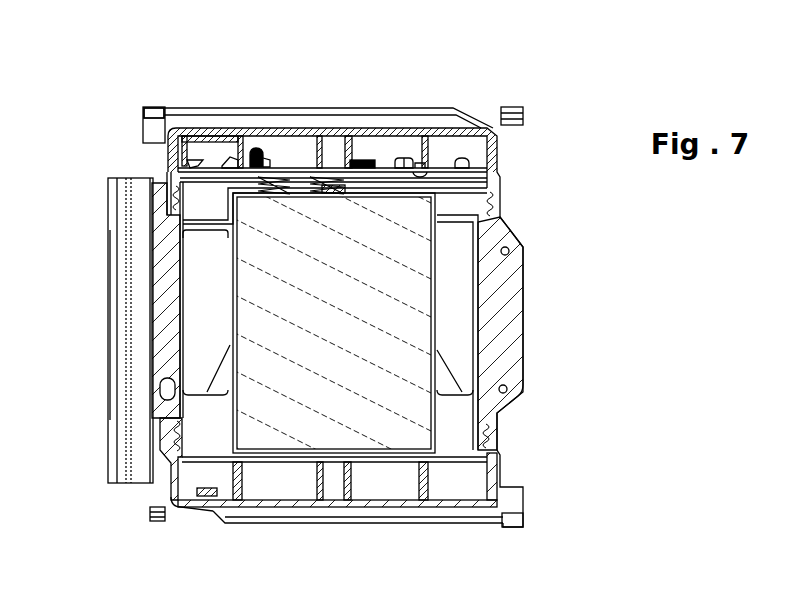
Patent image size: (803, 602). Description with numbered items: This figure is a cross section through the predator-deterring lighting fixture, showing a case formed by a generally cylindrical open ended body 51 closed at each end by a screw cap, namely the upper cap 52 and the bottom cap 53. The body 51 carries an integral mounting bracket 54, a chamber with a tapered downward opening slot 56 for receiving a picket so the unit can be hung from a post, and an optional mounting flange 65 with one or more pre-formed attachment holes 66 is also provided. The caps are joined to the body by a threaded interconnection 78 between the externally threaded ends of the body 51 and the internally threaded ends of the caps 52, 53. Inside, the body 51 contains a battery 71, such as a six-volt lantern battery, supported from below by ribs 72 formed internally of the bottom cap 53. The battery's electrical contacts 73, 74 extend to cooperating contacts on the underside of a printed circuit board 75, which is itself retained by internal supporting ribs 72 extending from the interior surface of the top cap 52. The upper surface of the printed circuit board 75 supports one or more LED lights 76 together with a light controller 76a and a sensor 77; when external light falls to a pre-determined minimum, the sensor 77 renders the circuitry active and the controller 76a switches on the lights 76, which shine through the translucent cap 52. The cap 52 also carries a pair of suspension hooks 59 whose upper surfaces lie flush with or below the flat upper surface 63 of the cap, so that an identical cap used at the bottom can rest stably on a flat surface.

The open ended body 51 is at (498, 230).
The upper cap 52 is at (498, 153).
The bottom cap 53 is at (497, 475).
The mounting bracket 54 is at (140, 176).
The tapered downward opening slot 56 is at (110, 287).
The suspension hooks 59 is at (154, 107).
The upper surface of the cap 63 is at (270, 108).
The mounting flange 65 is at (515, 315).
The hole 66 is at (507, 388).
The battery 71 is at (413, 427).
The internal supporting ribs 72 is at (255, 150).
The battery electrical contact 73 is at (268, 155).
The battery electrical contact 74 is at (352, 160).
The printed circuit board 75 is at (420, 165).
The LED lights 76 is at (278, 177).
The light controller 76a is at (460, 162).
The sensor 77 is at (400, 160).
The threaded interconnection 78 is at (183, 432).